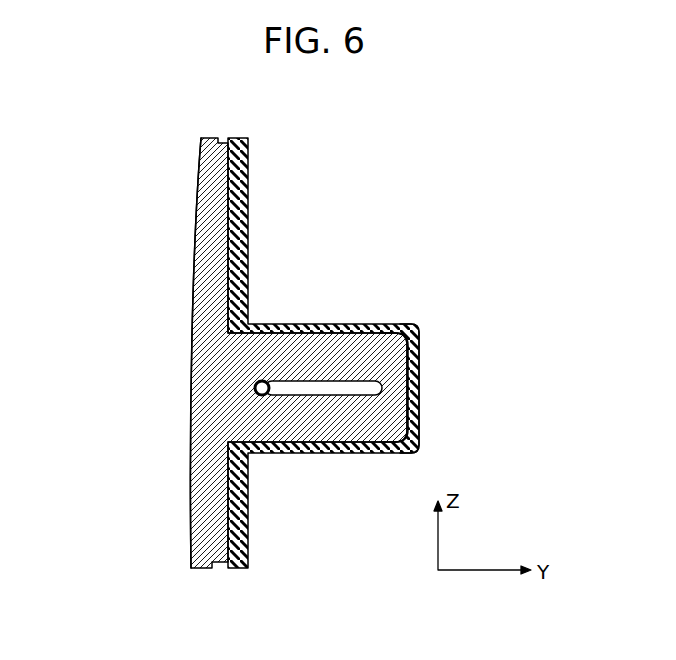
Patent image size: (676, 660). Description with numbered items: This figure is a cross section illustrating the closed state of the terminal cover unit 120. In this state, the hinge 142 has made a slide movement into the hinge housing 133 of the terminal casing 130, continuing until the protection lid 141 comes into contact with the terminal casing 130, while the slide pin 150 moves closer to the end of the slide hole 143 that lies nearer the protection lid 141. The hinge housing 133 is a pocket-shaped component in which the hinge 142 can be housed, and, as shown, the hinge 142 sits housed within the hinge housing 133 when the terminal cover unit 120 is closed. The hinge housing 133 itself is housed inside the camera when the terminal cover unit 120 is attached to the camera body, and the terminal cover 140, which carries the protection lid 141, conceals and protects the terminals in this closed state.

The terminal cover unit 120 is at (128, 122).
The terminal casing 130 is at (240, 538).
The hinge housing 133 is at (418, 447).
The terminal cover 140 is at (193, 255).
The protection lid 141 is at (208, 500).
The hinge 142 is at (410, 355).
The slide hole 143 is at (348, 390).
The slide pin 150 is at (264, 380).